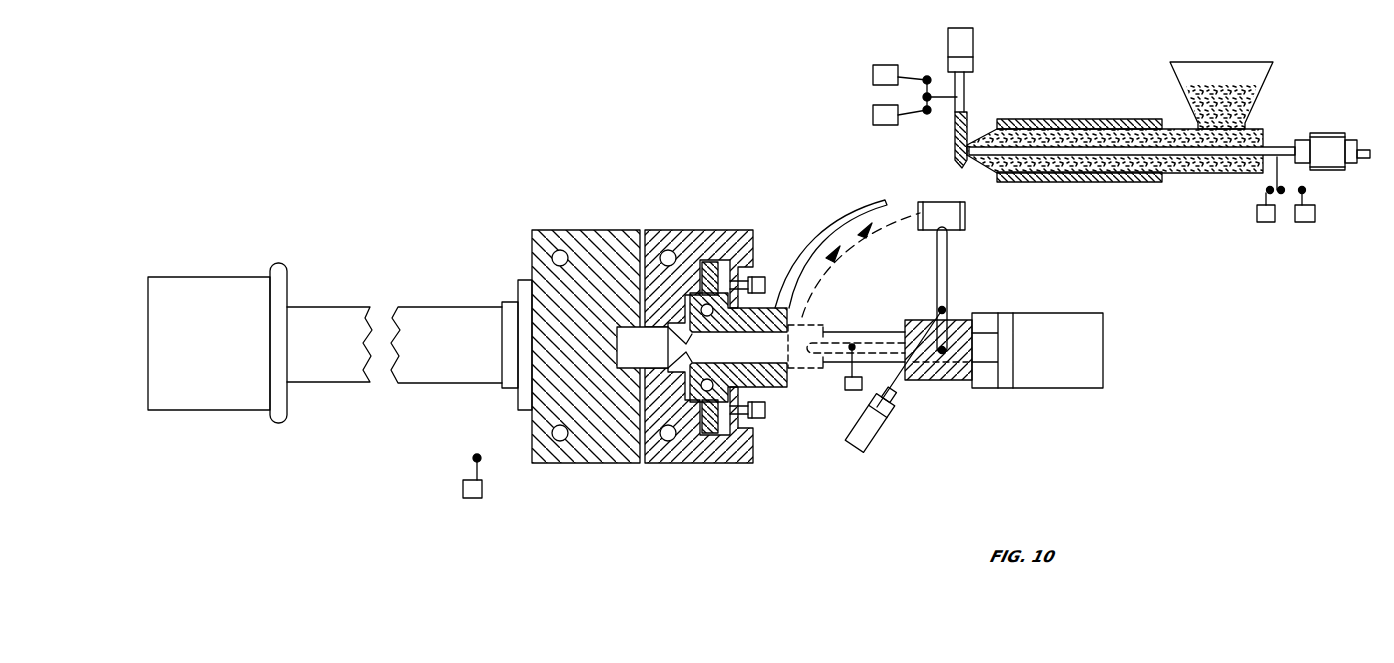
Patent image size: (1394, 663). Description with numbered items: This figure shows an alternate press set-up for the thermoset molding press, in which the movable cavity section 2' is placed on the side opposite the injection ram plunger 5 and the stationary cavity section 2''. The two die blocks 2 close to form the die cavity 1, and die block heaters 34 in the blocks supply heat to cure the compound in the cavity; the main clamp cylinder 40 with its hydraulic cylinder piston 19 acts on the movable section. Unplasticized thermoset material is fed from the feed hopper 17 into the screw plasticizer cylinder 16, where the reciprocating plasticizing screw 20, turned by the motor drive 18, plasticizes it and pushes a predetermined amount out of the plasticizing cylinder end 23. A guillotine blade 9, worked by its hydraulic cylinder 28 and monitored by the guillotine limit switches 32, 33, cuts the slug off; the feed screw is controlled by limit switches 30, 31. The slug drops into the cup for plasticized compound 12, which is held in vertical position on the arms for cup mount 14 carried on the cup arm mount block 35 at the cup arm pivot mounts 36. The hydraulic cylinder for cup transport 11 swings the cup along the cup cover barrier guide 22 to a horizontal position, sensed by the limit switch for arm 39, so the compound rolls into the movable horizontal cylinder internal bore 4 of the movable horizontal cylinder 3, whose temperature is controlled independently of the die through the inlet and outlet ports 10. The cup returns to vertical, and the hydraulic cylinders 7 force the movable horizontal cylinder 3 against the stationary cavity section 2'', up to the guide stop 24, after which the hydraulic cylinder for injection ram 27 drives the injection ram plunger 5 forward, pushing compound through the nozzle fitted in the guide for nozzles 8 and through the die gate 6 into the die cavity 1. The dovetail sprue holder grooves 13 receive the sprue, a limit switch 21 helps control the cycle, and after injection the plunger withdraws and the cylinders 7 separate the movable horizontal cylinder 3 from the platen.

The die cavity 1 is at (665, 335).
The die blocks 2 is at (630, 480).
The movable cavity section 2' is at (586, 365).
The stationary cavity section 2'' is at (699, 365).
The movable horizontal cylinder 3 is at (766, 386).
The movable horizontal cylinder internal bore 4 is at (772, 334).
The injection ram plunger 5 is at (835, 363).
The die gate 6 is at (690, 445).
The hydraulic cylinders 7 is at (766, 285).
The guide for nozzles 8 is at (665, 350).
The guillotine blade 9 is at (958, 160).
The inlet and outlet ports for heat exchange medium 10 is at (720, 292).
The hydraulic cylinder for cup transport 11 is at (866, 445).
The cup for plasticized compound 12 is at (965, 212).
The dovetail sprue holder grooves 13 is at (863, 332).
The arms for cup mount 14 is at (947, 287).
The screw plasticizer cylinder 16 is at (1120, 119).
The feed hopper 17 is at (1218, 62).
The motor drive for plasticizer screw 18 is at (1327, 133).
The hydraulic cylinder piston 19 is at (343, 307).
The reciprocating plasticizing screw 20 is at (1082, 175).
The limit switch 21 is at (463, 493).
The cup cover barrier guide 22 is at (821, 233).
The plasticizing cylinder end 23 is at (967, 145).
The guide stop 24 is at (742, 260).
The hydraulic cylinder for injection ram 27 is at (1061, 313).
The hydraulic cylinder for guillotine blade 28 is at (967, 28).
The limit switch feed screw 30 is at (1300, 222).
The limit switch feed screw 31 is at (1267, 222).
The guillotine limit switch 32 is at (873, 118).
The guillotine limit switch 33 is at (873, 77).
The die block heaters 34 is at (672, 250).
The cup arm mount block 35 is at (941, 381).
The cup arm pivot mounts 36 is at (942, 365).
The limit switch for arm 39 is at (857, 391).
The main clamp cylinder 40 is at (238, 278).